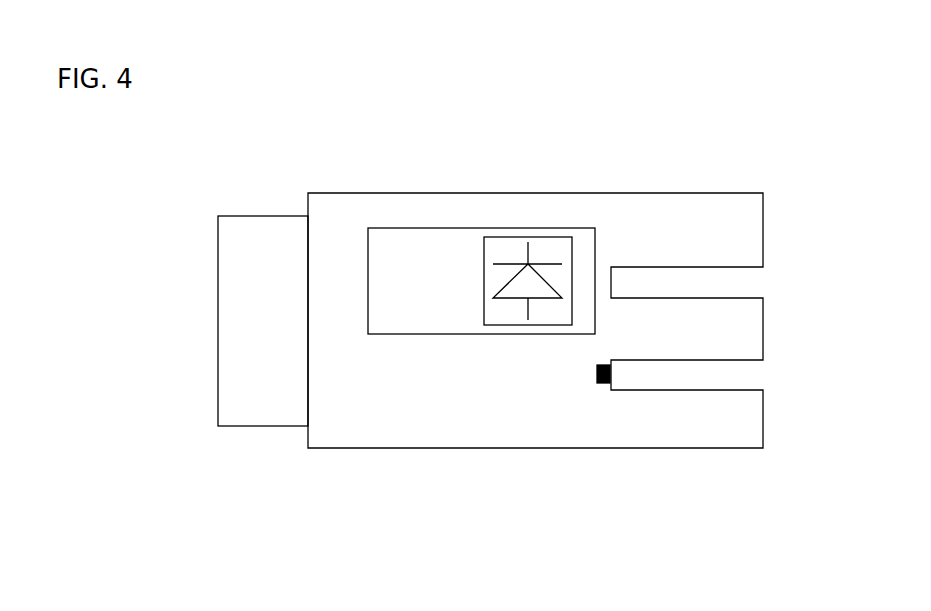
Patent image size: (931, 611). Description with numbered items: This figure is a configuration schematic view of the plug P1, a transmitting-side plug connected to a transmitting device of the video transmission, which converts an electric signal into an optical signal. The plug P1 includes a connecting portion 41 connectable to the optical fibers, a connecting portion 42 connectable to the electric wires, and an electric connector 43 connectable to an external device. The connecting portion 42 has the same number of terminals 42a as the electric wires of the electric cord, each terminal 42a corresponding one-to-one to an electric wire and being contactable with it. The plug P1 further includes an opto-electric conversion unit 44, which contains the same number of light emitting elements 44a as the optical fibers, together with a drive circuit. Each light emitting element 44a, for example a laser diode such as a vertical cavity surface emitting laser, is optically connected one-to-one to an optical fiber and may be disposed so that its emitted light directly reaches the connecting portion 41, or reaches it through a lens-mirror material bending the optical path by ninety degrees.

The plug P1 is at (257, 188).
The connecting portion 41 is at (612, 285).
The connecting portion 42 is at (612, 362).
The terminal 42a is at (596, 375).
The electric connector 43 is at (258, 427).
The opto-electric conversion unit 44 is at (412, 224).
The light emitting element 44a is at (489, 270).